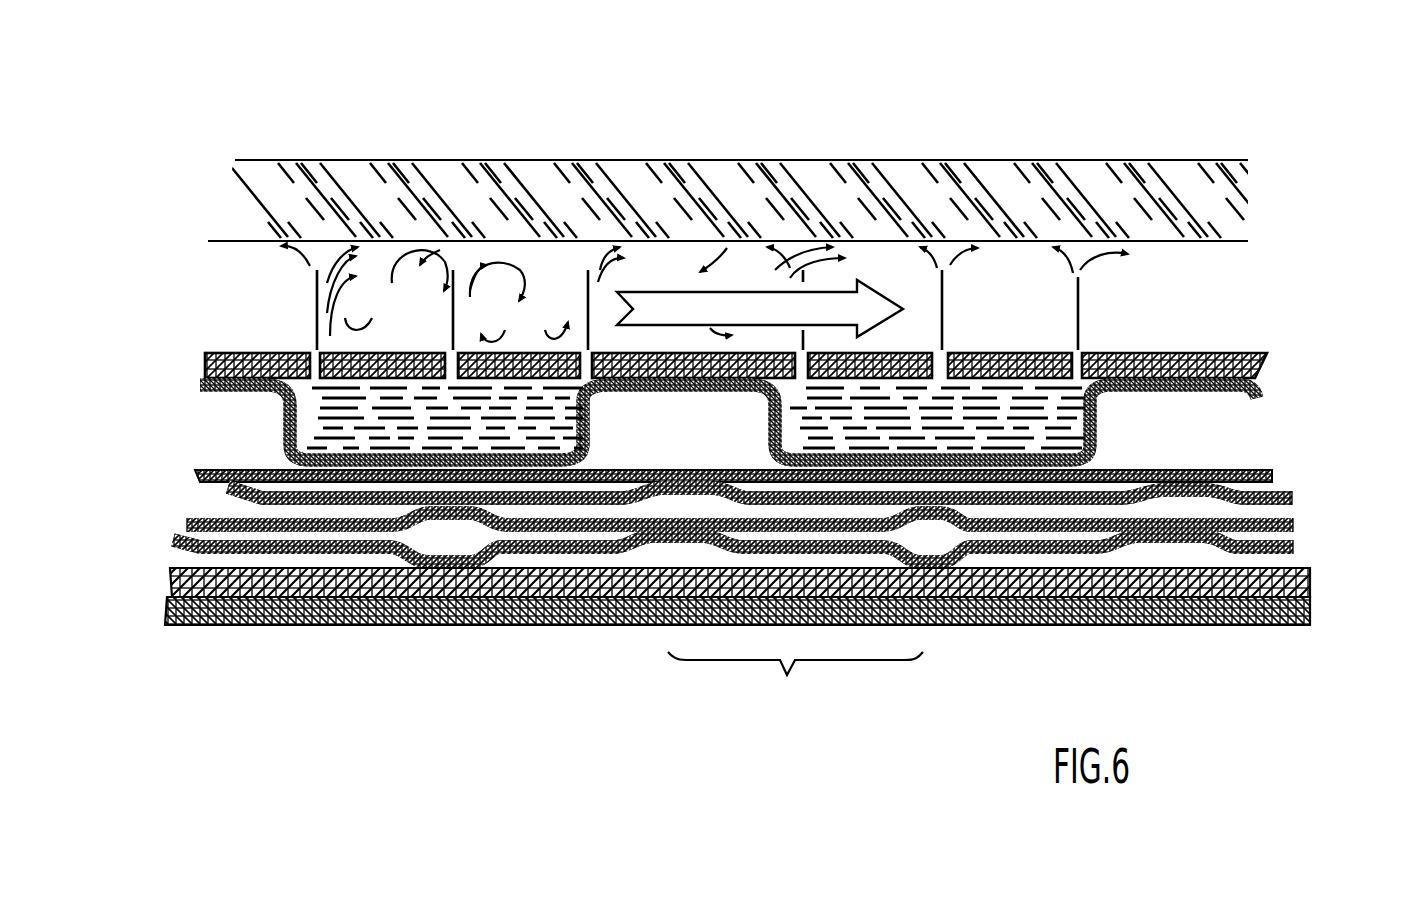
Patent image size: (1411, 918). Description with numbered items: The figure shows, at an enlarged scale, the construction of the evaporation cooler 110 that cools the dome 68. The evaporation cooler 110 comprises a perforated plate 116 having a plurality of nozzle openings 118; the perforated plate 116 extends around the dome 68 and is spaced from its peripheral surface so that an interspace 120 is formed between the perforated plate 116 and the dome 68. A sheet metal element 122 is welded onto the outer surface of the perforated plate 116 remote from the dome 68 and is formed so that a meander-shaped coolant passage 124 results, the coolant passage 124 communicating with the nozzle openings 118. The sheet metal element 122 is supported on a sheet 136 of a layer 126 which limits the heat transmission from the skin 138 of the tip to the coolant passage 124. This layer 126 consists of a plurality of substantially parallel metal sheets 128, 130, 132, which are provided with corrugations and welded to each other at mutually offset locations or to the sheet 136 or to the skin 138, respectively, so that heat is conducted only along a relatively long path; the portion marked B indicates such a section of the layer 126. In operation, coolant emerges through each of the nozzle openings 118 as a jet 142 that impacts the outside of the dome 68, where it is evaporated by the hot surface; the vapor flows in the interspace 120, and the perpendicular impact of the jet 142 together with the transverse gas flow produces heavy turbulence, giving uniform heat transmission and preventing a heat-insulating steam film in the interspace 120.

The dome 68 is at (752, 185).
The evaporation cooler 110 is at (741, 528).
The perforated plate 116 is at (225, 352).
The nozzle openings 118 is at (953, 352).
The interspace 120 is at (295, 288).
The sheet metal element 122 is at (288, 420).
The coolant passage 124 is at (330, 436).
The layer 126 is at (1293, 518).
The metal sheet 128 is at (307, 627).
The metal sheet 130 is at (400, 627).
The metal sheet 132 is at (563, 627).
The sheet 136 is at (1130, 472).
The skin 138 is at (652, 625).
The jet 142 is at (947, 292).
The region B is at (795, 689).